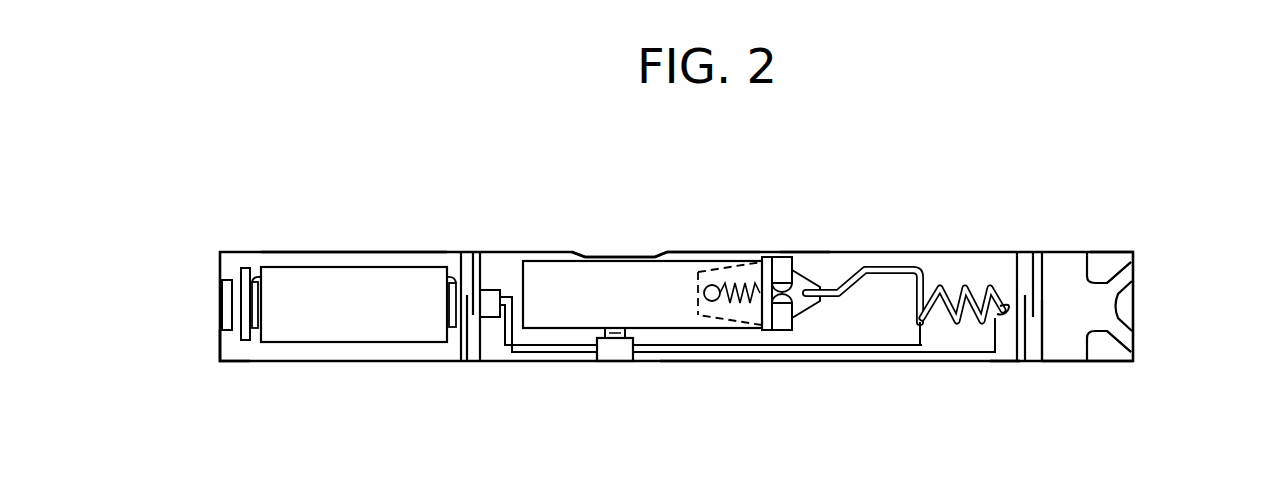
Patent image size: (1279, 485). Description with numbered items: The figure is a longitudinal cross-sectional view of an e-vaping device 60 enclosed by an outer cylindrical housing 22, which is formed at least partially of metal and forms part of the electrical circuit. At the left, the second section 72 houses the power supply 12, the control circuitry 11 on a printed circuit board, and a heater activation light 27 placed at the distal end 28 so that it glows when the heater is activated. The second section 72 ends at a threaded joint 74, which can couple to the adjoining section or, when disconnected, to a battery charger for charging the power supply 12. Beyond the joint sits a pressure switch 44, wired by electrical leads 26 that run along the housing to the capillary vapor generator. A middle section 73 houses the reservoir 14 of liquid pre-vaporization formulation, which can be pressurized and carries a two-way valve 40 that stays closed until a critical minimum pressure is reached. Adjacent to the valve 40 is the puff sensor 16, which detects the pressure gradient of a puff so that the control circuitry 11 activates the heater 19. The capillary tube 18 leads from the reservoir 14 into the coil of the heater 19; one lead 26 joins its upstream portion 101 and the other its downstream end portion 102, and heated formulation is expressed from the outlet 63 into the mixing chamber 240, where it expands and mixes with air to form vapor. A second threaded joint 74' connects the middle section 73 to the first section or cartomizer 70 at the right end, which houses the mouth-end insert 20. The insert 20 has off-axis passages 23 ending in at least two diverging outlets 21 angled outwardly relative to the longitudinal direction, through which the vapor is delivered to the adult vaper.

The e-vaping device 60 is at (620, 180).
The downstream end portion 102 is at (592, 252).
The second section 72 is at (350, 252).
The power supply 12 is at (290, 266).
The heater activation light 27 is at (222, 294).
The distal end 28 is at (220, 347).
The control circuitry 11 is at (244, 342).
The threaded joint 74 is at (456, 270).
The threaded joint 74' is at (1035, 236).
The pressure switch 44 is at (612, 331).
The electrical leads 26 is at (850, 353).
The reservoir 14 is at (633, 290).
The outer cylindrical housing 22 is at (700, 252).
The valve 40 is at (742, 306).
The puff sensor 16 is at (843, 313).
The capillary tube 18 is at (953, 288).
The heater 19 is at (955, 322).
The outlet 63 is at (1008, 298).
The upstream portion 101 is at (905, 322).
The middle section 73 is at (803, 253).
The off-axis passages 23 is at (1120, 257).
The mouth-end insert 20 is at (1134, 304).
The outlets 21 is at (1134, 272).
The first section or cartomizer 70 is at (1070, 363).
The mixing chamber 240 is at (1066, 318).